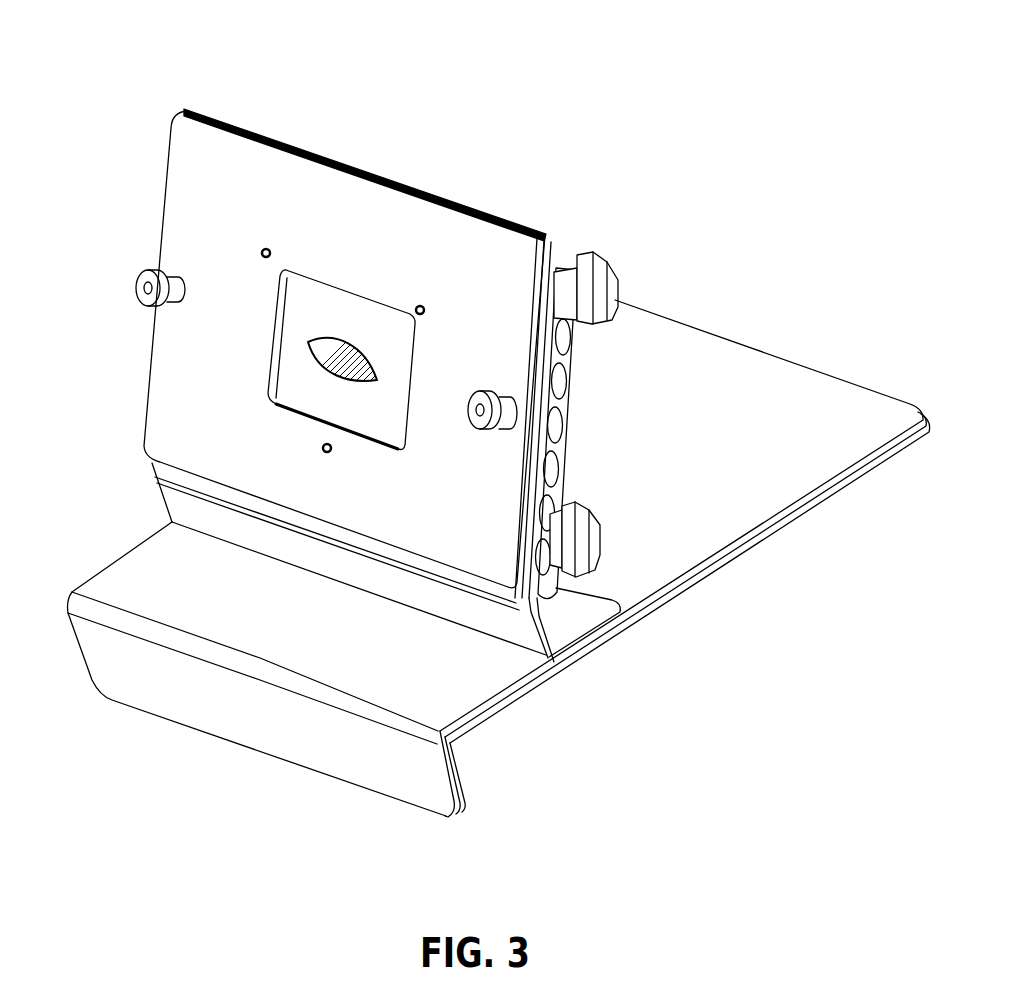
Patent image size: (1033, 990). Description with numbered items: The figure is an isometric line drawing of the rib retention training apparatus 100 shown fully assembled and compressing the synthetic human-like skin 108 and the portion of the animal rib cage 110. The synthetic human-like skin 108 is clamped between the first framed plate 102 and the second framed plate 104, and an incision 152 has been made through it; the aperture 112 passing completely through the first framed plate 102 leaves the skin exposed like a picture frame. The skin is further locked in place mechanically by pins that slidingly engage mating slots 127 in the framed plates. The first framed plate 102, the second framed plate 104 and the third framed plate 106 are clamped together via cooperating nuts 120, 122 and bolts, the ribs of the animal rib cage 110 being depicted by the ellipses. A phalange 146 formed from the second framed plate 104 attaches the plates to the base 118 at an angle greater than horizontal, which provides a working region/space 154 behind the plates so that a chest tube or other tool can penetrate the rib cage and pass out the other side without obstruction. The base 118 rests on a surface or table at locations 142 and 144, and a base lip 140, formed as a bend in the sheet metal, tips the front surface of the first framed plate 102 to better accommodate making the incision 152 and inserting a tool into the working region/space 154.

The rib retention training apparatus 100 is at (370, 49).
The first framed plate 102 is at (147, 405).
The second framed plate 104 is at (540, 243).
The third framed plate 106 is at (563, 447).
The synthetic sheet of human-like skin 108 is at (303, 370).
The portion of the animal rib cage 110 is at (560, 383).
The aperture 112 is at (322, 296).
The base 118 is at (783, 410).
The nut 120 is at (135, 288).
The nut 122 is at (623, 283).
The slot 127 is at (262, 253).
The base lip 140 is at (250, 703).
The location 142 is at (497, 812).
The location 144 is at (923, 462).
The phalange 146 is at (580, 613).
The incision 152 is at (367, 357).
The working region/space 154 is at (706, 352).